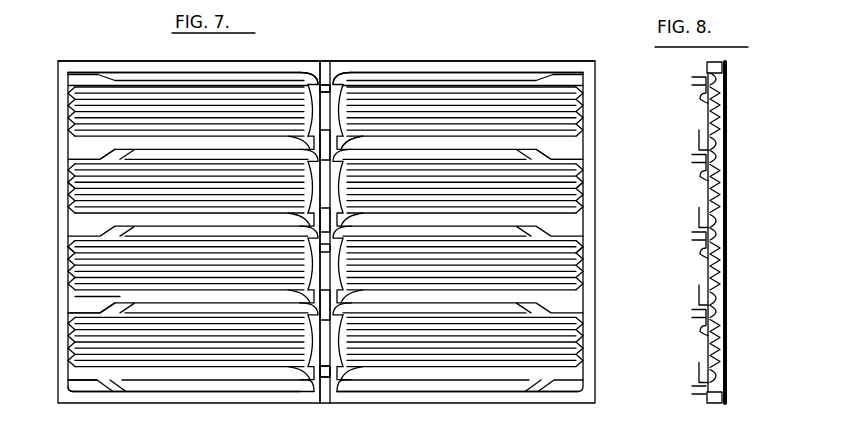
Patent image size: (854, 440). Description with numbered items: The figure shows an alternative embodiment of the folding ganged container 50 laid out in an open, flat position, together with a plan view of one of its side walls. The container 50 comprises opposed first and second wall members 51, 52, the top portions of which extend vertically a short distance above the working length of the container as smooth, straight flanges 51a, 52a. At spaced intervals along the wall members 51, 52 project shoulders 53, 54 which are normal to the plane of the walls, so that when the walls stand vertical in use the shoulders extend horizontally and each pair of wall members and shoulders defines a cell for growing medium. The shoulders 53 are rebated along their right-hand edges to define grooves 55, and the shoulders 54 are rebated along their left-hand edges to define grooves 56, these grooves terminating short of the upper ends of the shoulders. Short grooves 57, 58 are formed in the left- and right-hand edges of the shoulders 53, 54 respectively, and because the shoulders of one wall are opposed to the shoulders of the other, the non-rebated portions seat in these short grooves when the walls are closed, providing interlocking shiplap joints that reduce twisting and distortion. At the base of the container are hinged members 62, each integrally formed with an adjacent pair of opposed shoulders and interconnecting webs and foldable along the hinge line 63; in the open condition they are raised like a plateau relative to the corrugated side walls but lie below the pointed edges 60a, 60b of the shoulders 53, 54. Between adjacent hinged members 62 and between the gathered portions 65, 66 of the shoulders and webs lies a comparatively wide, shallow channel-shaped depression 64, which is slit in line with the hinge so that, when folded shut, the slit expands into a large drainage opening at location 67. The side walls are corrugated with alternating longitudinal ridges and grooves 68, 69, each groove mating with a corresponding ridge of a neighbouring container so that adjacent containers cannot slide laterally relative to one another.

In FIG. 7, the container 50 is at (371, 58).
In FIG. 8, the container 50 is at (729, 120).
In FIG. 7, the first wall member 51 is at (246, 60).
In FIG. 7, the flange 51a is at (70, 190).
In FIG. 7, the second wall member 52 is at (456, 60).
In FIG. 8, the second wall member 52 is at (708, 63).
In FIG. 7, the flange 52a is at (590, 170).
In FIG. 7, the shoulder 53 is at (70, 385).
In FIG. 8, the shoulder 53 is at (706, 386).
In FIG. 7, the shoulder 54 is at (76, 311).
In FIG. 8, the shoulder 54 is at (706, 394).
In FIG. 7, the groove 55 is at (223, 388).
In FIG. 7, the groove 56 is at (478, 395).
In FIG. 7, the short groove 57 is at (96, 394).
In FIG. 7, the short groove 58 is at (78, 304).
In FIG. 7, the pointed edge 60a is at (90, 152).
In FIG. 7, the pointed edge 60b is at (586, 150).
In FIG. 7, the hinged member 62 is at (346, 150).
In FIG. 7, the hinge line 63 is at (323, 72).
In FIG. 7, the channel-shaped depression 64 is at (345, 80).
In FIG. 7, the gathered portion 65 is at (308, 72).
In FIG. 7, the gathered portion 66 is at (377, 68).
In FIG. 7, the drainage opening location 67 is at (350, 374).
In FIG. 7, the groove 68 is at (72, 247).
In FIG. 7, the groove 69 is at (588, 262).